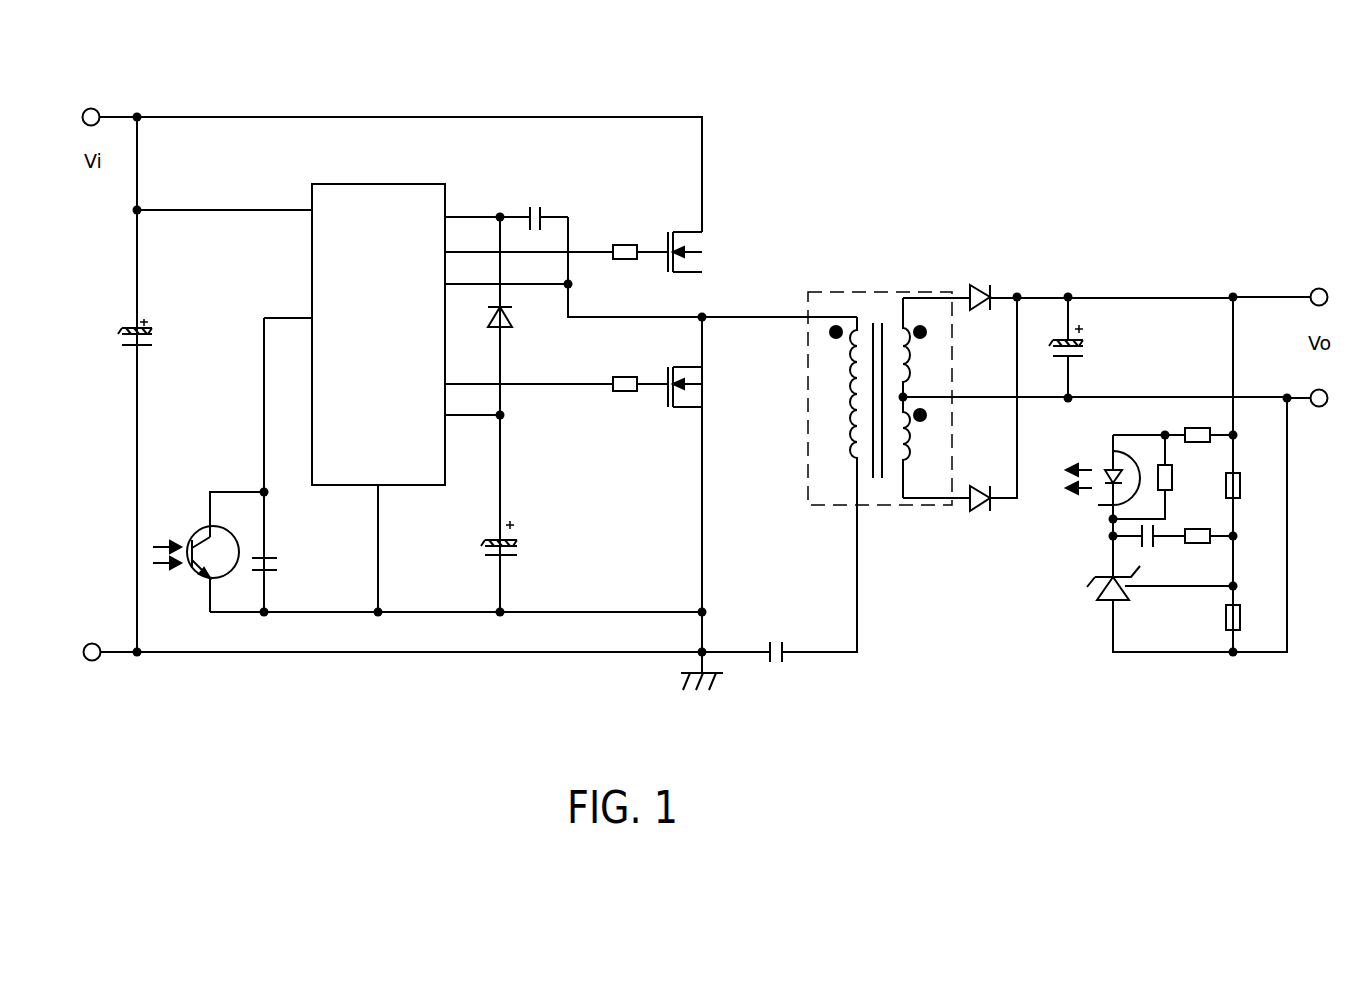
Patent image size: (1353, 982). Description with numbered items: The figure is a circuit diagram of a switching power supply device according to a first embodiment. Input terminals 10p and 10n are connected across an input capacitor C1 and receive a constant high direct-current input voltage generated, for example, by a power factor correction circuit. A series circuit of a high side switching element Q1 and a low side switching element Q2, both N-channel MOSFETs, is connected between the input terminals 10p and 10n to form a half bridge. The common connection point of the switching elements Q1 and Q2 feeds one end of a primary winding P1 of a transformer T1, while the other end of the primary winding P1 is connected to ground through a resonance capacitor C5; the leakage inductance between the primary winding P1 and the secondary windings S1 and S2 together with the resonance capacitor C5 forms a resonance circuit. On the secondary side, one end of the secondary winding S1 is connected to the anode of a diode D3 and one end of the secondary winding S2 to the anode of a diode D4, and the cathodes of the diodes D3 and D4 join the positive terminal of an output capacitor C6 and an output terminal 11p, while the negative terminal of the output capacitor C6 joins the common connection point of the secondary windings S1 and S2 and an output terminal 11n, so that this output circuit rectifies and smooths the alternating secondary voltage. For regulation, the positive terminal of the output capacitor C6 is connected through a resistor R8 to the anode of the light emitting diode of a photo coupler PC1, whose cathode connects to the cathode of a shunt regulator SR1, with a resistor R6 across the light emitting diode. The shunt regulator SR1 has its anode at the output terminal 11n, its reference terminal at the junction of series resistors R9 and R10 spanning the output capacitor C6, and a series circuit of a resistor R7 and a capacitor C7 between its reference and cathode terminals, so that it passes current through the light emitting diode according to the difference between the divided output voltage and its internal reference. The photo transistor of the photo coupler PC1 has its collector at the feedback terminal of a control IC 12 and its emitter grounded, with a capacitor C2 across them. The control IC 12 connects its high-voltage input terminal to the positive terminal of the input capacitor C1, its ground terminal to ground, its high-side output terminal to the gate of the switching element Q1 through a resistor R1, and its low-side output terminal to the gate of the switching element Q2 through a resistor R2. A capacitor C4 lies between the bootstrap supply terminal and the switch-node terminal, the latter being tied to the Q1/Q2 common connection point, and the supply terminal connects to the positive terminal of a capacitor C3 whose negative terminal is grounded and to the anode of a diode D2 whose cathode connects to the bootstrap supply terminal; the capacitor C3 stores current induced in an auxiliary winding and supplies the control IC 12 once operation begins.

The input terminal 10p is at (92, 108).
The input terminal 10n is at (95, 643).
The output terminal 11p is at (1319, 288).
The output terminal 11n is at (1321, 407).
The control IC 12 is at (321, 182).
The input capacitor C1 is at (151, 334).
The capacitor C2 is at (274, 576).
The capacitor C3 is at (483, 539).
The capacitor C4 is at (534, 206).
The resonance capacitor C5 is at (775, 668).
The output capacitor C6 is at (1082, 343).
The capacitor C7 is at (1157, 549).
The diode D2 is at (515, 320).
The diode D3 is at (979, 285).
The diode D4 is at (979, 513).
The resistor R1 is at (624, 240).
The resistor R2 is at (624, 372).
The resistor R6 is at (1180, 477).
The resistor R7 is at (1198, 525).
The resistor R8 is at (1198, 425).
The resistor R9 is at (1249, 485).
The resistor R10 is at (1254, 617).
The high side switching element Q1 is at (702, 252).
The low side switching element Q2 is at (702, 387).
The transformer T1 is at (880, 385).
The primary winding P1 is at (838, 393).
The secondary winding S1 is at (922, 347).
The secondary winding S2 is at (922, 447).
The photo coupler PC1 is at (201, 526).
The shunt regulator SR1 is at (1106, 596).